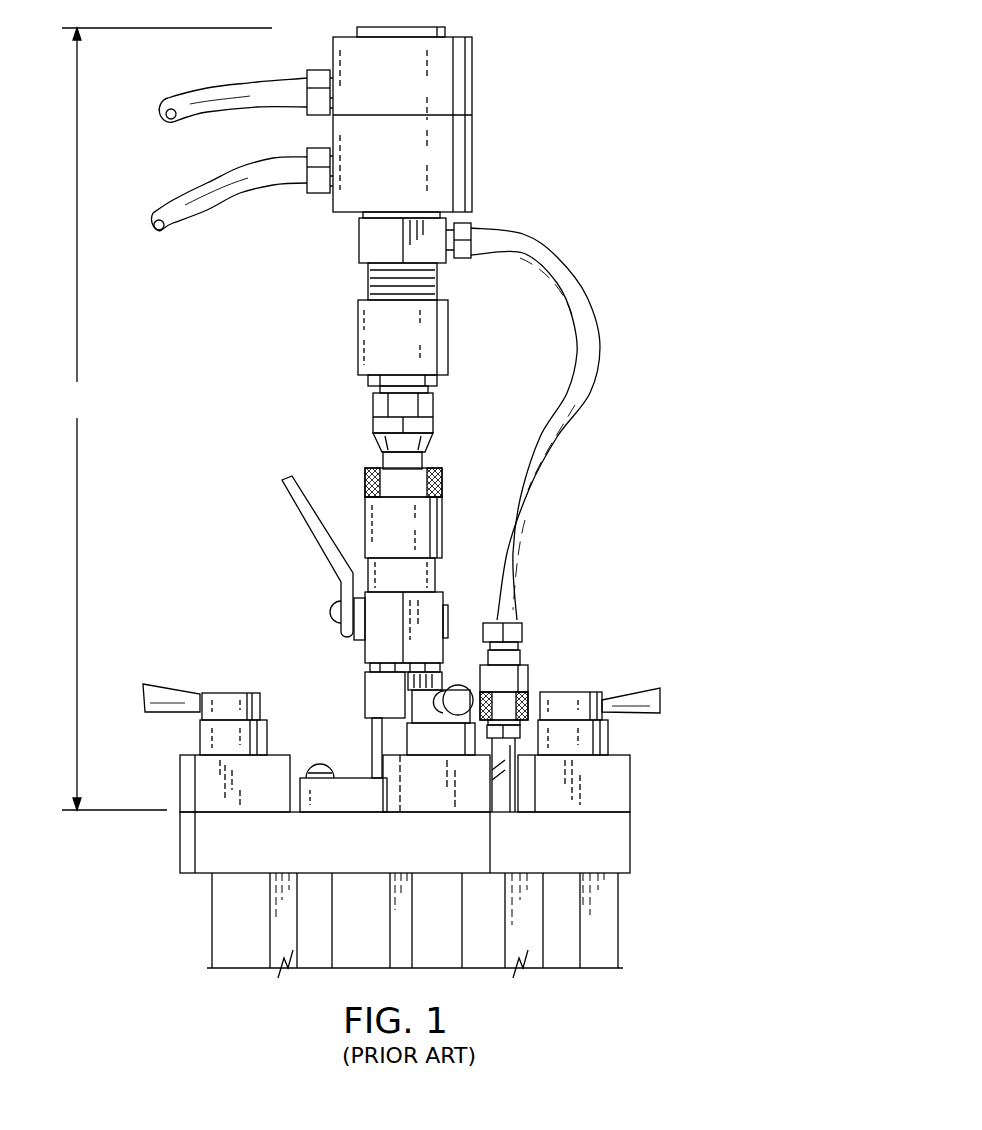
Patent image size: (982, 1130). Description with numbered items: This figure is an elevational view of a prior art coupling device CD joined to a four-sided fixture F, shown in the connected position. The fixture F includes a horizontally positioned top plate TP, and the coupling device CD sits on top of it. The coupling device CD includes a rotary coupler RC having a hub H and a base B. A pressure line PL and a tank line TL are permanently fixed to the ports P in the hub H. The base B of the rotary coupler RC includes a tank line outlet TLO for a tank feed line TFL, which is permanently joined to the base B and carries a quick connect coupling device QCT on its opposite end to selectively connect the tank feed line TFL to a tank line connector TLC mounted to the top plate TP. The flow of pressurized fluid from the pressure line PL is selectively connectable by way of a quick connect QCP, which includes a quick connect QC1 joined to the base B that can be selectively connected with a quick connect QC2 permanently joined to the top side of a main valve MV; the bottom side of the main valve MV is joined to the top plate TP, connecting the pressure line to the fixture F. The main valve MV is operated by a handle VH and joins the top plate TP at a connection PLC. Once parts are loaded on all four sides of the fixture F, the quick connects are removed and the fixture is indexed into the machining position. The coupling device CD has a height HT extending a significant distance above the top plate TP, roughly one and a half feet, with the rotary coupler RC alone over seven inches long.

The height HT is at (166, 419).
The hub H is at (458, 60).
The rotary coupler RC is at (472, 87).
The coupling device CD is at (593, 160).
The ports P is at (327, 90).
The pressure line PL is at (223, 93).
The tank line TL is at (208, 198).
The base B is at (362, 240).
The tank line outlet TLO is at (488, 248).
The tank feed line TFL is at (590, 357).
The quick connect QC1 is at (433, 410).
The quick connect QCP is at (345, 456).
The quick connect QC2 is at (435, 520).
The main valve MV is at (363, 652).
The valve handle VH is at (310, 518).
The pressure line connection PLC is at (375, 746).
The quick connect coupling device QCT is at (522, 680).
The tank line connector TLC is at (511, 748).
The top plate TP is at (624, 832).
The fixture F is at (647, 880).